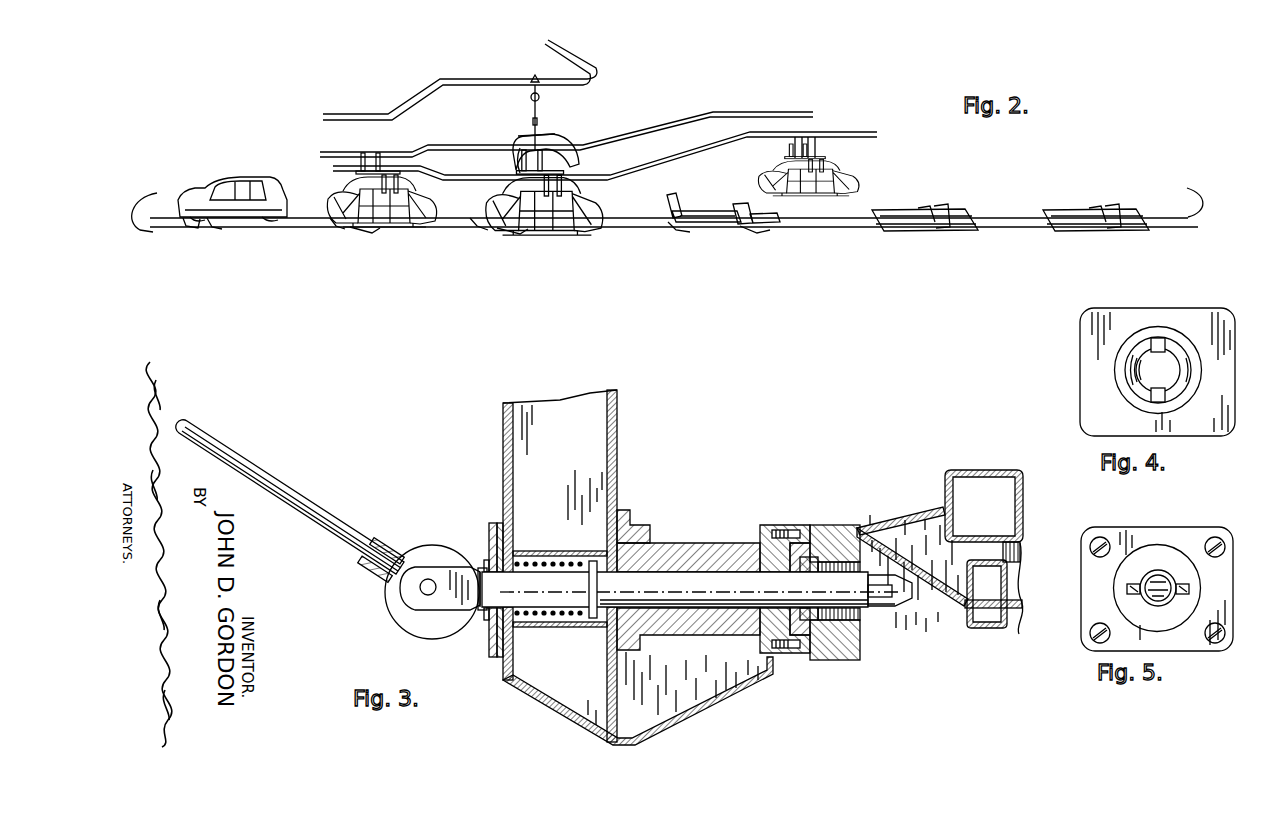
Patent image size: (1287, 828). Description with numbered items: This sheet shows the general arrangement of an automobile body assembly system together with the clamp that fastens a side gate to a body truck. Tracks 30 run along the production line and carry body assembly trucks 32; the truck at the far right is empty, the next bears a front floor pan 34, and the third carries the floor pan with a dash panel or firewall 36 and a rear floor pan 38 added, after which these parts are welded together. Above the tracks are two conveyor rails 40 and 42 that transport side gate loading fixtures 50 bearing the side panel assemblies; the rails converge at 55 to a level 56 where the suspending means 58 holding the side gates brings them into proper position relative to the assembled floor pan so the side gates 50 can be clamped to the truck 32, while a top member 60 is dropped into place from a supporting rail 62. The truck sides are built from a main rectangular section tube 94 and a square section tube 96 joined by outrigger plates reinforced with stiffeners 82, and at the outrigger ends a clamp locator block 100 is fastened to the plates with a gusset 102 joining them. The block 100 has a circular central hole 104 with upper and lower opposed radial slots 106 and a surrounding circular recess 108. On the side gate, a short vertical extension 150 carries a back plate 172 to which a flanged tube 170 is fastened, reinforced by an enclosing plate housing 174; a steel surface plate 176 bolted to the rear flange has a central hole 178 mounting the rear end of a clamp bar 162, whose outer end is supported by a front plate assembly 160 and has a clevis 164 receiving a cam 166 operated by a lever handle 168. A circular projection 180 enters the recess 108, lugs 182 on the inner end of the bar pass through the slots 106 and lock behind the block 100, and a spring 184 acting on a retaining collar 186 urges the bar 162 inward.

In FIG. 2, the tracks 30 is at (157, 193).
In FIG. 2, the body assembly trucks 32 is at (186, 226).
In FIG. 2, the front floor pan 34 is at (899, 228).
In FIG. 2, the dash panel or firewall 36 is at (676, 207).
In FIG. 2, the rear floor pan 38 is at (752, 206).
In FIG. 2, the conveyor rail 40 is at (790, 113).
In FIG. 2, the conveyor rail 42 is at (835, 135).
In FIG. 2, the side gate loading fixtures 50 is at (540, 232).
In FIG. 2, the convergence point 55 is at (680, 152).
In FIG. 2, the level 56 is at (466, 155).
In FIG. 2, the suspending means 58 is at (795, 158).
In FIG. 2, the top member 60 is at (553, 136).
In FIG. 2, the supporting rail 62 is at (398, 100).
In FIG. 3, the stiffeners 82 is at (1022, 552).
In FIG. 3, the main rectangular section tube 94 is at (1007, 625).
In FIG. 3, the square section tube 96 is at (958, 472).
In FIG. 3, the clamp locator block 100 is at (860, 660).
In FIG. 4, the clamp locator block 100 is at (1205, 318).
In FIG. 3, the gusset 102 is at (948, 598).
In FIG. 4, the circular central hole 104 is at (1178, 365).
In FIG. 3, the radial slots 106 is at (845, 562).
In FIG. 4, the radial slots 106 is at (1140, 349).
In FIG. 3, the circular recess 108 is at (800, 540).
In FIG. 4, the circular recess 108 is at (1116, 372).
In FIG. 3, the vertical extension 150 is at (617, 462).
In FIG. 3, the front plate assembly 160 is at (480, 545).
In FIG. 3, the clamp bar 162 is at (652, 575).
In FIG. 5, the clamp bar 162 is at (1172, 595).
In FIG. 3, the clevis 164 is at (426, 572).
In FIG. 3, the cam 166 is at (386, 603).
In FIG. 3, the lever handle 168 is at (298, 495).
In FIG. 3, the flanged tube 170 is at (707, 543).
In FIG. 3, the back plate 172 is at (633, 515).
In FIG. 3, the enclosing plate housing 174 is at (722, 700).
In FIG. 3, the steel surface plate 176 is at (767, 525).
In FIG. 5, the steel surface plate 176 is at (1188, 527).
In FIG. 3, the central hole 178 is at (808, 604).
In FIG. 3, the circular projection 180 is at (812, 655).
In FIG. 5, the circular projection 180 is at (1195, 572).
In FIG. 3, the lugs 182 is at (880, 597).
In FIG. 5, the lugs 182 is at (1190, 588).
In FIG. 3, the spring 184 is at (545, 618).
In FIG. 3, the retaining collar 186 is at (592, 620).